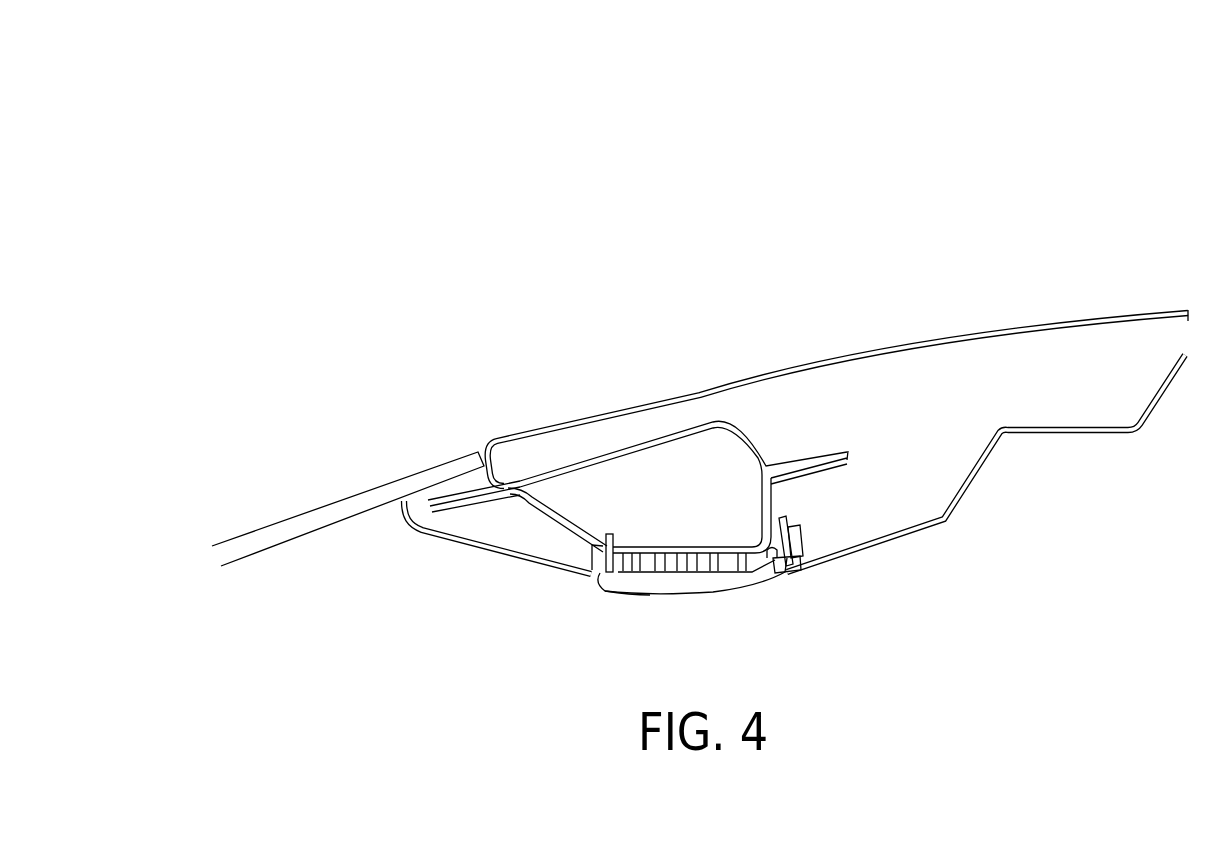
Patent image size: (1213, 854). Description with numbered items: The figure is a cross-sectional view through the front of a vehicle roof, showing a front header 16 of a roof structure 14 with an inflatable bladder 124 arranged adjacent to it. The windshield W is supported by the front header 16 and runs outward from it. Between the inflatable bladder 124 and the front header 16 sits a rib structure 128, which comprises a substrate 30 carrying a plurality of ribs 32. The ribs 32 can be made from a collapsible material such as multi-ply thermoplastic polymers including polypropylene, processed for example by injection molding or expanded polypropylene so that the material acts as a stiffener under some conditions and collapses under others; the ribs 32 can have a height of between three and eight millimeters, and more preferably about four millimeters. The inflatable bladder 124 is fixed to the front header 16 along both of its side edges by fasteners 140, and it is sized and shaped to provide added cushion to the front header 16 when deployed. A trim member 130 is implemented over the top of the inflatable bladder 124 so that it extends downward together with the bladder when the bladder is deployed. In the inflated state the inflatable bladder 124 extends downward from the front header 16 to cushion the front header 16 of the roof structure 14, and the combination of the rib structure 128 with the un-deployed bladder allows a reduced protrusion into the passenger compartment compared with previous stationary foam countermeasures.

The roof structure 14 is at (1027, 304).
The windshield W is at (358, 503).
The trim member 130 is at (873, 556).
The front header 16 is at (787, 570).
The substrate 30 is at (680, 545).
The ribs 32 is at (660, 545).
The fasteners 140 is at (788, 520).
The inflatable bladder 124 is at (667, 583).
The rib structure 128 is at (647, 598).